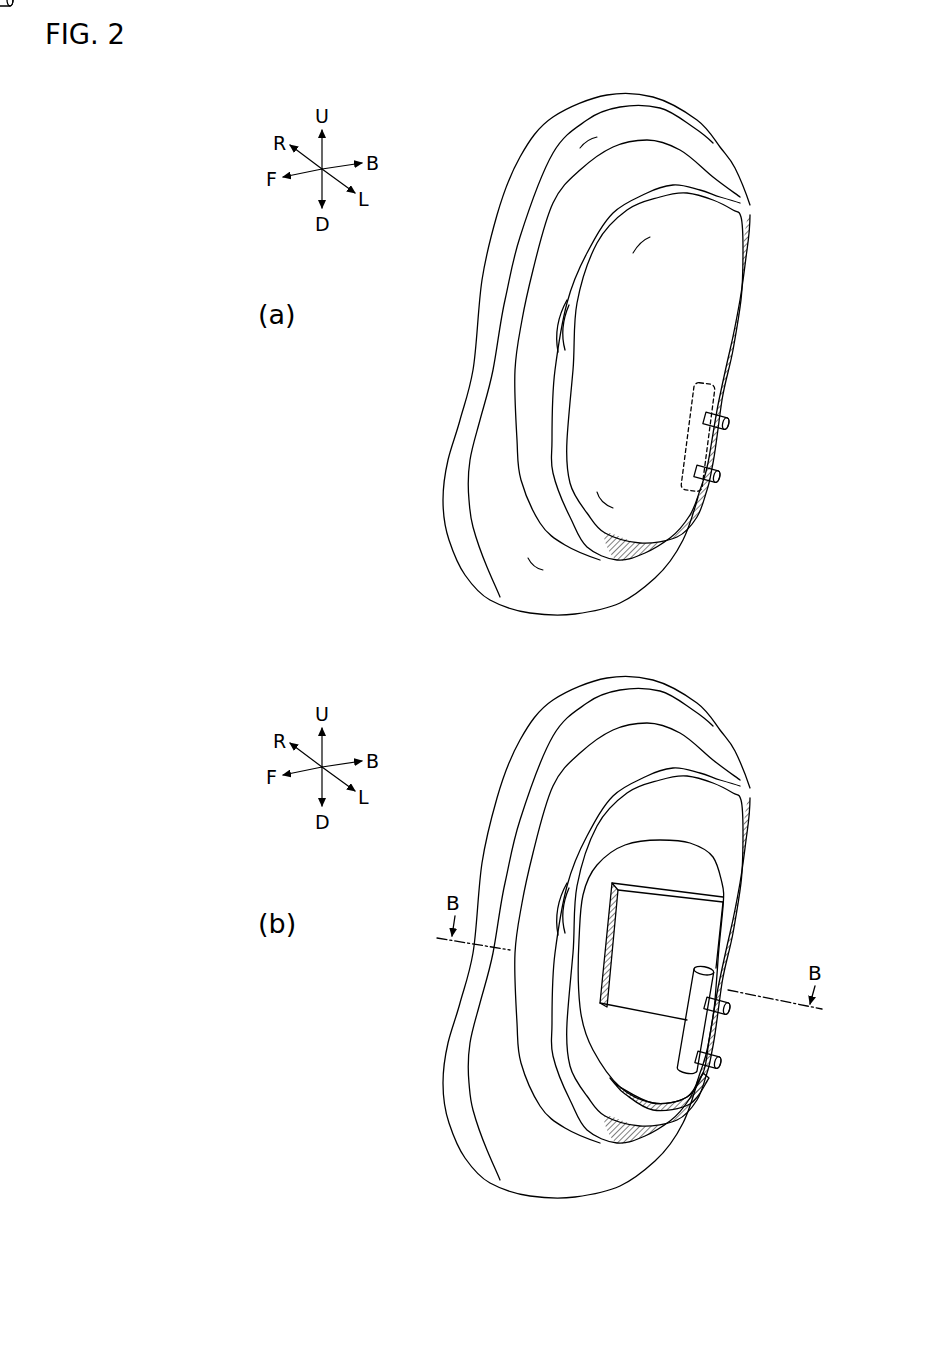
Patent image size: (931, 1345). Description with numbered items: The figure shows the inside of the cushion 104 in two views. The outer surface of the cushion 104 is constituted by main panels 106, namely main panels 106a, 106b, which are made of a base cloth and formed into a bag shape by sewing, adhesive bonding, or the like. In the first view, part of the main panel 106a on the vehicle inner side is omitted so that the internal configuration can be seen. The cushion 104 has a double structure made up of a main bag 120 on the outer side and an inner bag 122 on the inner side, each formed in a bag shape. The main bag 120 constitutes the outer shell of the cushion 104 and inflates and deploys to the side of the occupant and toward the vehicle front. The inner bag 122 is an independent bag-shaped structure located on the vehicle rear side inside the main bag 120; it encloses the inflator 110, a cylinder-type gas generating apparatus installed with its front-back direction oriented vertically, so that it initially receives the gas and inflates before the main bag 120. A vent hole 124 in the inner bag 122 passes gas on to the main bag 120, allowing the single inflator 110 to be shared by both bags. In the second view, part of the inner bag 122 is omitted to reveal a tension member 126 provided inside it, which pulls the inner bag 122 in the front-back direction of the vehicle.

The cushion 104 is at (487, 140).
The main panels 106 is at (533, 643).
The main panel 106a is at (500, 462).
The main panel 106b is at (465, 393).
The inflator 110 is at (713, 383).
The main bag 120 is at (545, 296).
The inner bag 122 is at (713, 280).
The vent hole 124 is at (566, 322).
The tension member 126 is at (705, 920).